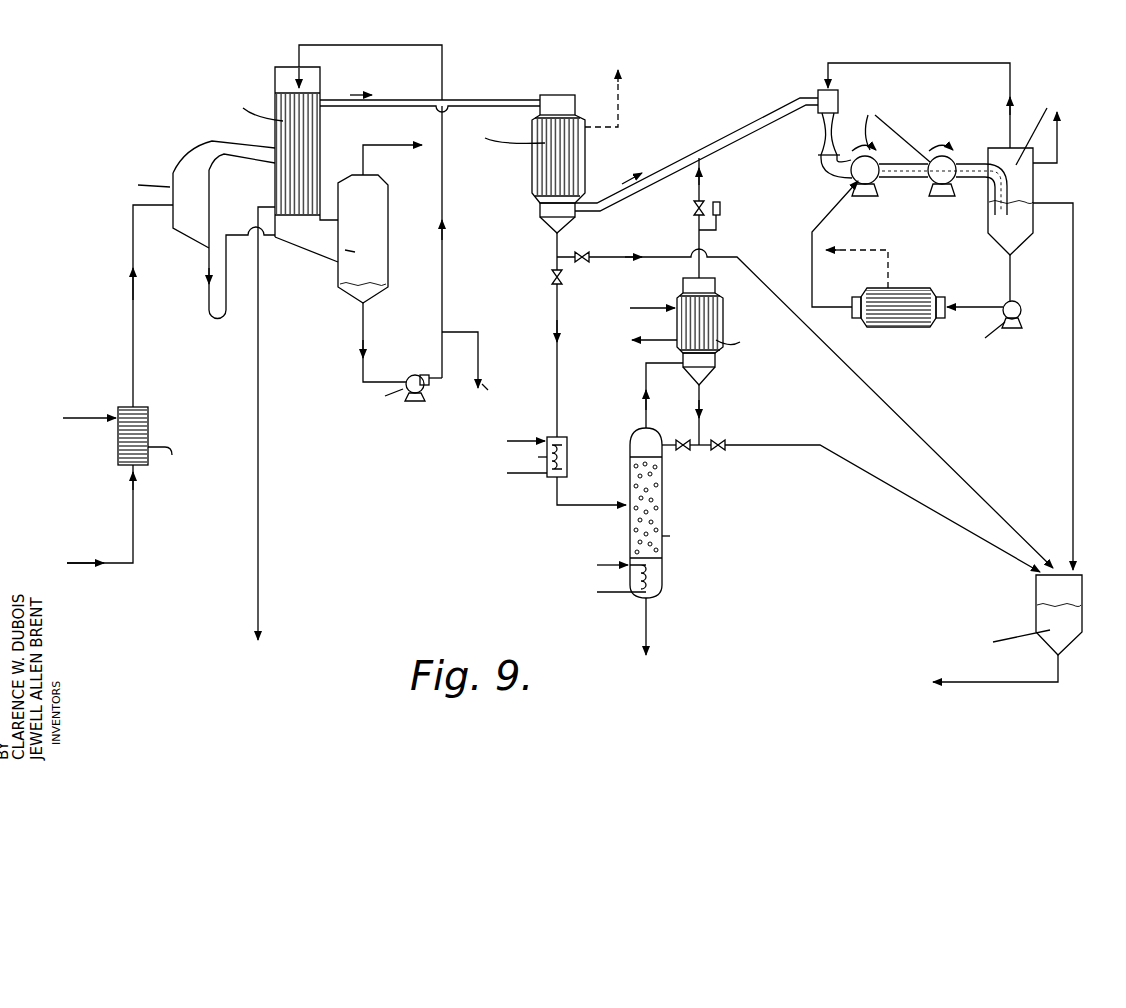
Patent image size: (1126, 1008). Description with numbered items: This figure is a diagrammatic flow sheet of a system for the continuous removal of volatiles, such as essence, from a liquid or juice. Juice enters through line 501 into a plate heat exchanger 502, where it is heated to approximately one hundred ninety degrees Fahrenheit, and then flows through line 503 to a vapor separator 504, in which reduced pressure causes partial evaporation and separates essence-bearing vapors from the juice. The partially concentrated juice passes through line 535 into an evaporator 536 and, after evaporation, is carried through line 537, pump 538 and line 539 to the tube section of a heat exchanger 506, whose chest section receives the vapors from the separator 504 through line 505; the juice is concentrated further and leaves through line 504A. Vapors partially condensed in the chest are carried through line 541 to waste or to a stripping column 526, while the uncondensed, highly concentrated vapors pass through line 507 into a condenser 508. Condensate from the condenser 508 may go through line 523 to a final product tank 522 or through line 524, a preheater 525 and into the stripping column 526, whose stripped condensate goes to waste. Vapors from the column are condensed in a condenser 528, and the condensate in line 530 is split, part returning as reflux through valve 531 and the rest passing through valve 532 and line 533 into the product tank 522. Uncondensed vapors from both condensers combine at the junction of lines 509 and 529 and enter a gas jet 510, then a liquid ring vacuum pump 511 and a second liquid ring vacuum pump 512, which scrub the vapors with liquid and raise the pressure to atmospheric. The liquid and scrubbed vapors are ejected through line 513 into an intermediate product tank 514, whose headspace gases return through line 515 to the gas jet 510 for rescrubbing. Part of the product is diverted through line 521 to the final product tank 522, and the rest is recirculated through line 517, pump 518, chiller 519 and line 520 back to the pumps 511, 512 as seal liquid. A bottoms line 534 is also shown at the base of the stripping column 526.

The line 501 is at (133, 522).
The plate heat exchanger 502 is at (148, 420).
The line 503 is at (133, 322).
The vapor separator 504 is at (173, 176).
The line 504A is at (478, 355).
The line 505 is at (215, 140).
The heat exchanger 506 is at (275, 82).
The line 507 is at (470, 100).
The condenser 508 is at (531, 165).
The line 509 is at (672, 157).
The gas jet 510 is at (823, 135).
The liquid ring vacuum pump 511 is at (887, 189).
The liquid ring vacuum pump 512 is at (962, 190).
The line 513 is at (972, 160).
The intermediate product tank 514 is at (1025, 180).
The line 515 is at (922, 62).
The line 517 is at (1010, 272).
The pump 518 is at (1020, 322).
The chiller 519 is at (895, 330).
The line 520 is at (812, 268).
The line 521 is at (1073, 415).
The final product tank 522 is at (1036, 617).
The line 523 is at (653, 257).
The line 524 is at (557, 305).
The preheater 525 is at (567, 457).
The stripping column 526 is at (662, 508).
The condenser 528 is at (723, 325).
The line 529 is at (703, 185).
The line 530 is at (702, 393).
The valve 531 is at (681, 452).
The valve 532 is at (720, 452).
The line 533 is at (850, 462).
The column bottoms line 534 is at (647, 617).
The line 535 is at (208, 300).
The evaporator 536 is at (335, 276).
The line 537 is at (362, 360).
The pump 538 is at (425, 395).
The line 539 is at (442, 205).
The line 541 is at (258, 455).